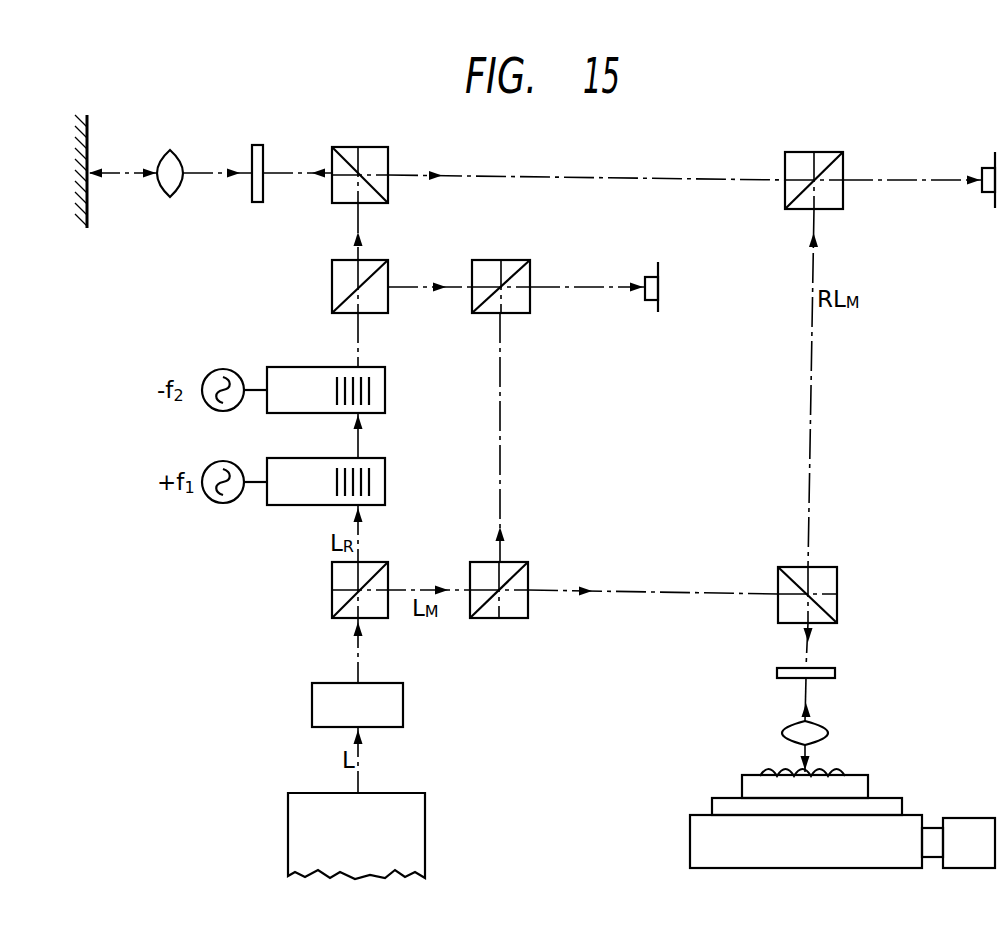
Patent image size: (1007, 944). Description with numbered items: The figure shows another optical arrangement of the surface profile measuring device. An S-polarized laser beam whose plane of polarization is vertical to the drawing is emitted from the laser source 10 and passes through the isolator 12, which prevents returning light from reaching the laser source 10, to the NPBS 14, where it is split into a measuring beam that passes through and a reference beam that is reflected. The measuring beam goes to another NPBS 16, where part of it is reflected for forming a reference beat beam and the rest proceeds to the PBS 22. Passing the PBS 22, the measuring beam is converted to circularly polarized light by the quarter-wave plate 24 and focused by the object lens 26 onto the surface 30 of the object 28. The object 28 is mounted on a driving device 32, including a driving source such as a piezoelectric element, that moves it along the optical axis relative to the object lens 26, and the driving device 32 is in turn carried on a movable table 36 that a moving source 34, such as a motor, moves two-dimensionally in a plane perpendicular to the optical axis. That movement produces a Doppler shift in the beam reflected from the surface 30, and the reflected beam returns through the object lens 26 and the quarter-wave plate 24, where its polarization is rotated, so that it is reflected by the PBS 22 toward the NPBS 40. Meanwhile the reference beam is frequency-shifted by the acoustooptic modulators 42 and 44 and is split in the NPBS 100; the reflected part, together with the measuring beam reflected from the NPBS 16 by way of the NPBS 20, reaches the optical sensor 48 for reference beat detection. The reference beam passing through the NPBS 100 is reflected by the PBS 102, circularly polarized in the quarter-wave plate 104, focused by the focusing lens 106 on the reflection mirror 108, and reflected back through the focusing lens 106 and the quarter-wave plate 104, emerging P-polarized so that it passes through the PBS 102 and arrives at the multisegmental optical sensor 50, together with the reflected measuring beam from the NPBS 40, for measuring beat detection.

The laser source 10 is at (288, 818).
The isolator 12 is at (312, 698).
The NPBS 14 is at (332, 580).
The NPBS 16 is at (508, 618).
The NPBS 20 is at (489, 260).
The PBS 22 is at (837, 583).
The quarter-wave plate 24 is at (835, 673).
The object lens 26 is at (828, 733).
The object 28 is at (868, 786).
The surface 30 is at (777, 770).
The driving device 32 is at (724, 800).
The moving source 34 is at (978, 820).
The movable table 36 is at (690, 830).
The NPBS 40 is at (785, 163).
The acoustooptic modulator 42 is at (387, 450).
The acoustooptic modulator 44 is at (384, 357).
The optical sensor 48 is at (647, 277).
The multisegmental optical sensor 50 is at (980, 205).
The NPBS 100 is at (332, 287).
The PBS 102 is at (390, 155).
The quarter-wave plate 104 is at (258, 202).
The focusing lens 106 is at (176, 195).
The reflection mirror 108 is at (87, 215).